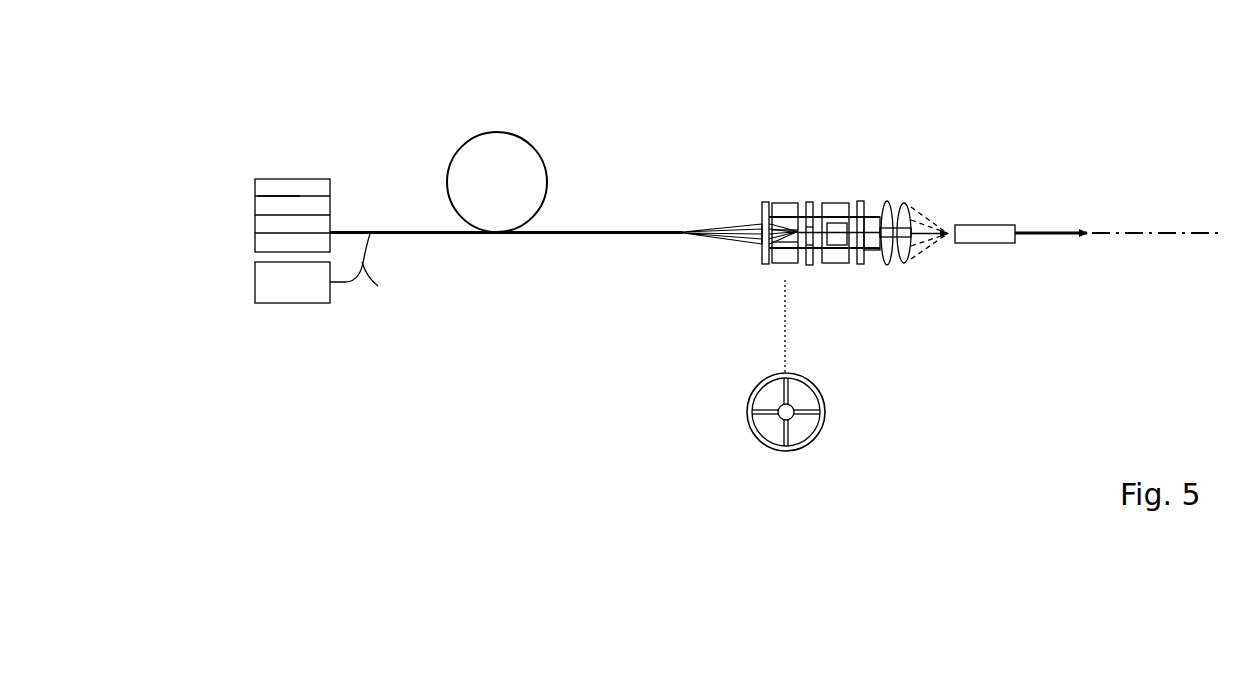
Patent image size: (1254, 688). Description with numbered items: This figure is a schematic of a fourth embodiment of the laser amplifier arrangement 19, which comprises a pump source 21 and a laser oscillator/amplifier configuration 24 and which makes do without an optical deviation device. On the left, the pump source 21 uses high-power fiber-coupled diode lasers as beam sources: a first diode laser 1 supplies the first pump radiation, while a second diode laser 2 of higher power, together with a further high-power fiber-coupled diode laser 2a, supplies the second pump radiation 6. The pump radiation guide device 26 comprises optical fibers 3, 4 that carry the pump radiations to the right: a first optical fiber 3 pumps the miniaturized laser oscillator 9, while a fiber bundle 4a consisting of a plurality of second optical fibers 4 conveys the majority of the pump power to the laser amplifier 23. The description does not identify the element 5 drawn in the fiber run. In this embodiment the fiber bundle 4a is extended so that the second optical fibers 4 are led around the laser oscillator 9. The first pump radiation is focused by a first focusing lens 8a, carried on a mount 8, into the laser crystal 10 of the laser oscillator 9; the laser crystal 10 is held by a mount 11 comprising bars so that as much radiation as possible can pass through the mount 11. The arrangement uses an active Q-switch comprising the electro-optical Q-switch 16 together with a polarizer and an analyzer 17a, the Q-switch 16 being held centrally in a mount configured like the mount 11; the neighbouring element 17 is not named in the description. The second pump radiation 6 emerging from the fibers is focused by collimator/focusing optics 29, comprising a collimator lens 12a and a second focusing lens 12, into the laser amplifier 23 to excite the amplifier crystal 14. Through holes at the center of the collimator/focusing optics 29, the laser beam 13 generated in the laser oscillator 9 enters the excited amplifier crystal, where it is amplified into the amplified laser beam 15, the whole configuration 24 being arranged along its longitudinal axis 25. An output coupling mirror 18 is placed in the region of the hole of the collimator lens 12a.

The first diode laser 1 is at (277, 282).
The second diode laser 2 is at (253, 187).
The high-power fiber-coupled diode laser 2a is at (285, 203).
The first optical fiber 3 is at (737, 237).
The second optical fiber 4 is at (355, 227).
The fiber bundle 4a is at (423, 236).
The fiber loop / coil 5 is at (500, 129).
The second pump radiation 6 is at (928, 249).
The mount 8 is at (762, 266).
The first focusing lens 8a is at (762, 226).
The laser oscillator 9 is at (822, 273).
The laser crystal 10 is at (790, 203).
The mount 11 is at (776, 203).
The second focusing lens 12 is at (893, 263).
The collimator lens 12a is at (892, 265).
The laser beam 13 is at (949, 232).
The amplifier crystal 14 is at (995, 244).
The amplified laser beam 15 is at (1048, 231).
The electro-optical Q-switch 16 is at (838, 263).
The plate 17 is at (810, 198).
The analyzer 17a is at (860, 200).
The output coupling mirror 18 is at (908, 203).
The laser amplifier arrangement 19 is at (535, 486).
The pump source 21 is at (381, 333).
The laser amplifier 23 is at (1002, 209).
The laser oscillator/amplifier configuration 24 is at (725, 384).
The longitudinal axis 25 is at (1177, 232).
The pump radiation guide device 26 is at (548, 240).
The collimator/focusing optics 29 is at (917, 207).